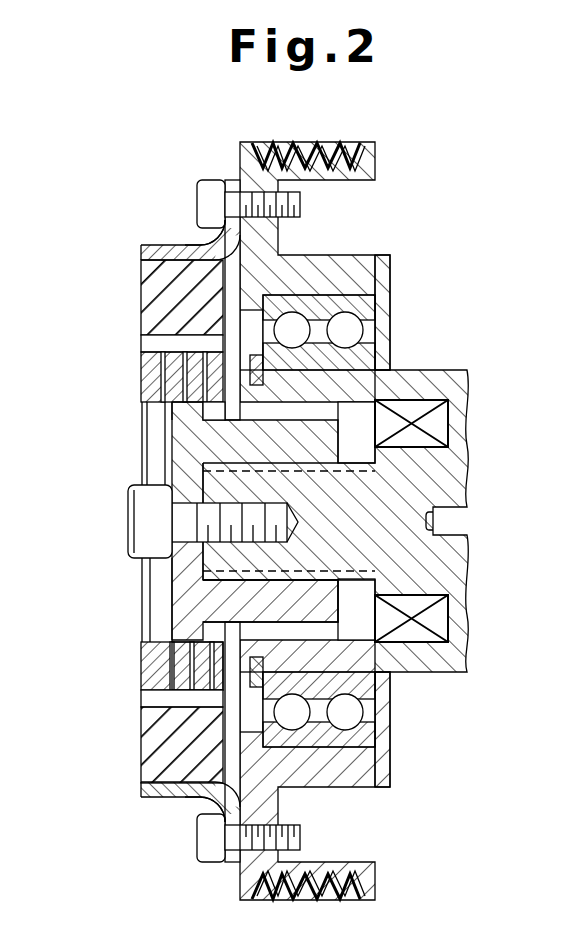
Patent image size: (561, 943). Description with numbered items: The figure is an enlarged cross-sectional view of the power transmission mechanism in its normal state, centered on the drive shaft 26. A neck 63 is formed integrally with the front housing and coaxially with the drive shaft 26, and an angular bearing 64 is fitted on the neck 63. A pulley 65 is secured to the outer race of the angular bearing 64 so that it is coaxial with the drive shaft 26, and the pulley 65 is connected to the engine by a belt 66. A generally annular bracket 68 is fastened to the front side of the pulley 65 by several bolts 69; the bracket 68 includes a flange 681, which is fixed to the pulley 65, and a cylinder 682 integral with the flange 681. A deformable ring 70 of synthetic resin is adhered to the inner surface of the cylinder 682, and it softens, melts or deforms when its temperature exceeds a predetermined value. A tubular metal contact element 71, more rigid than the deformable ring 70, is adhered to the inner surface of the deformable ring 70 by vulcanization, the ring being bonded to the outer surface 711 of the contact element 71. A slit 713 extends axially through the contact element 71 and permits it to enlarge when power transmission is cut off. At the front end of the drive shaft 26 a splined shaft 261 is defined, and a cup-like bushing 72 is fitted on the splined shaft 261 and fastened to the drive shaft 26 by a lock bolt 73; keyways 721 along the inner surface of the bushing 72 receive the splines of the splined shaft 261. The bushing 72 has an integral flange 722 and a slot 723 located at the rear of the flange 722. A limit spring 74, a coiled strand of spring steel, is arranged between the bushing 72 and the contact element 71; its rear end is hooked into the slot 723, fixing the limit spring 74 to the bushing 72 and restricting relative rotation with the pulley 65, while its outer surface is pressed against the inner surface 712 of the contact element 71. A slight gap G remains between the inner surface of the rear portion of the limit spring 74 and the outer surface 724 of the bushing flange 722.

The drive shaft 26 is at (437, 487).
The neck 63 is at (387, 380).
The angular bearing 64 is at (357, 330).
The pulley 65 is at (241, 157).
The belt 66 is at (305, 142).
The bracket 68 is at (139, 242).
The flange 681 is at (237, 170).
The cylinder 682 is at (190, 245).
The bolts 69 is at (200, 192).
The deformable ring 70 is at (141, 290).
The contact element 71 is at (139, 704).
The outer surface 711 is at (158, 720).
The inner surface 712 is at (172, 683).
The slit 713 is at (141, 340).
The bushing 72 is at (140, 489).
The keyways 721 is at (220, 568).
The flange 722 is at (185, 428).
The slot 723 is at (200, 448).
The outer surface 724 is at (160, 645).
The lock bolt 73 is at (136, 522).
The limit spring 74 is at (141, 375).
The splined shaft 261 is at (215, 582).
The gap G is at (178, 416).